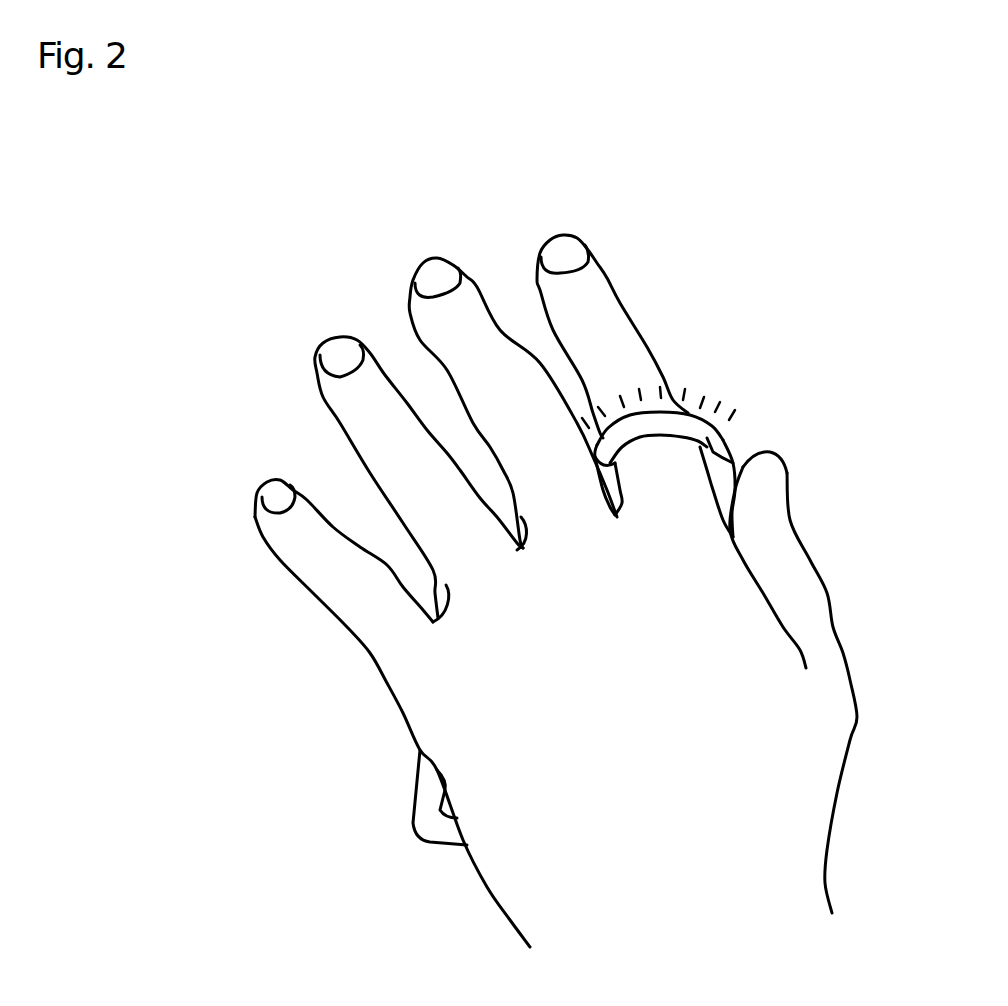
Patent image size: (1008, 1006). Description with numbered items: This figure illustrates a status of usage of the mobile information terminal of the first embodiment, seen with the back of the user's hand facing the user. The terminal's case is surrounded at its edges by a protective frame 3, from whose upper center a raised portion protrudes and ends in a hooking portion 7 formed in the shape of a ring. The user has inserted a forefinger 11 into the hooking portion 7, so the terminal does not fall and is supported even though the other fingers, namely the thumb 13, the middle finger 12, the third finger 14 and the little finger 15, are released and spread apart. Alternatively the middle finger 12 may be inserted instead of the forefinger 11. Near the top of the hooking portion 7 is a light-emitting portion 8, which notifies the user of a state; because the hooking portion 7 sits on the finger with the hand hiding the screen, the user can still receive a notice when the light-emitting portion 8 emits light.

The protective frame 3 is at (433, 790).
The hooking portion 7 is at (723, 458).
The light-emitting portion 8 is at (680, 423).
The forefinger 11 is at (603, 300).
The middle finger 12 is at (467, 305).
The thumb 13 is at (790, 543).
The third finger 14 is at (357, 393).
The little finger 15 is at (285, 519).